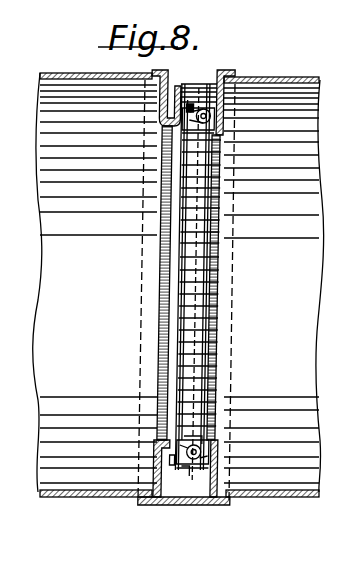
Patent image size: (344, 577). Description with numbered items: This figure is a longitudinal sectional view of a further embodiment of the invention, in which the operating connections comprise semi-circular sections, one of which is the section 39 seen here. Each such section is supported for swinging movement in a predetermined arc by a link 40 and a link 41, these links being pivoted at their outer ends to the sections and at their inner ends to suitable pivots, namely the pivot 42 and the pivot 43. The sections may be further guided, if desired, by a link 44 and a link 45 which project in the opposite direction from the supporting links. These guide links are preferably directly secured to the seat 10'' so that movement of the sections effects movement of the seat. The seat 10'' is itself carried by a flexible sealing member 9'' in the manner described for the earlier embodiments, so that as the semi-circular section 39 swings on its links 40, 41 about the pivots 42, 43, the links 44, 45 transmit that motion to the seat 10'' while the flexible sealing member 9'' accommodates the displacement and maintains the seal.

The link 44 is at (194, 100).
The semi-circular section 39 is at (220, 102).
The link 40 is at (212, 108).
The pivot 42 is at (213, 138).
The seat 10'' is at (157, 301).
The flexible sealing member 9'' is at (95, 286).
The pivot 43 is at (212, 440).
The link 41 is at (215, 446).
The link 45 is at (194, 466).